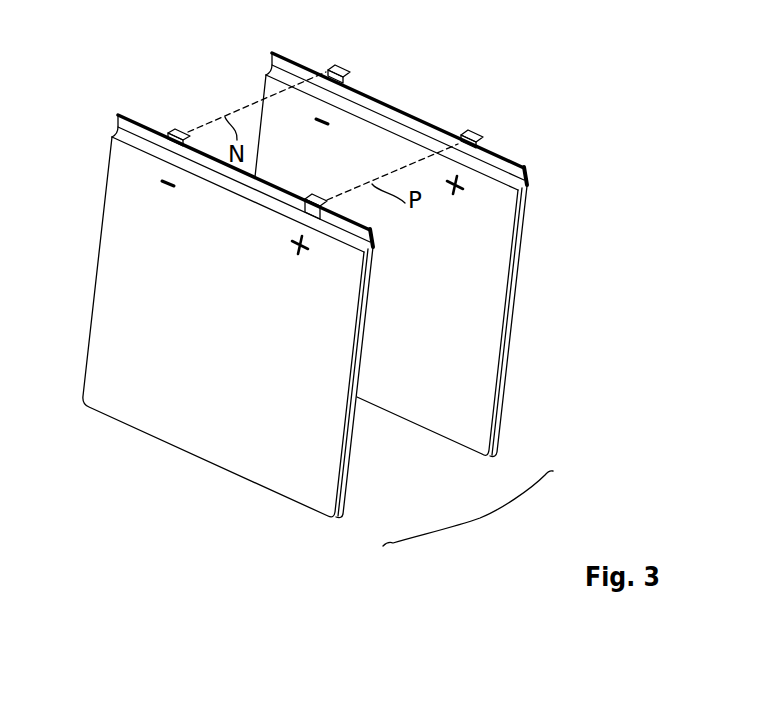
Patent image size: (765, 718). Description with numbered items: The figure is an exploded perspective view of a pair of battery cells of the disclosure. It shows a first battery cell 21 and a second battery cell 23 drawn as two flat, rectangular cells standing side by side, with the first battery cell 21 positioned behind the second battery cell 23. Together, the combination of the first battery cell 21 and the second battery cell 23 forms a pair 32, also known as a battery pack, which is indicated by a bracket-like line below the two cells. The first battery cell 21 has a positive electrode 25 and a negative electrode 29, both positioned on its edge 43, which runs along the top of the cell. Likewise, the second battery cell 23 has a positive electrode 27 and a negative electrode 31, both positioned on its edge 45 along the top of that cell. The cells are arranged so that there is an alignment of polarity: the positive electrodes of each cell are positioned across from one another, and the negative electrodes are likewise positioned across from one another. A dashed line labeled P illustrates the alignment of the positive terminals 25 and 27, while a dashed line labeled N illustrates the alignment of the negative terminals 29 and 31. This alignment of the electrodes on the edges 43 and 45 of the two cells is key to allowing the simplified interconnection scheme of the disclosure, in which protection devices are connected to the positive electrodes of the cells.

The first battery cell 21 is at (460, 432).
The second battery cell 23 is at (283, 487).
The positive electrode 25 is at (473, 133).
The positive electrode 27 is at (318, 199).
The negative electrode 29 is at (340, 66).
The negative electrode 31 is at (176, 130).
The pair 32 is at (480, 518).
The edge 43 is at (524, 177).
The edge 45 is at (118, 130).